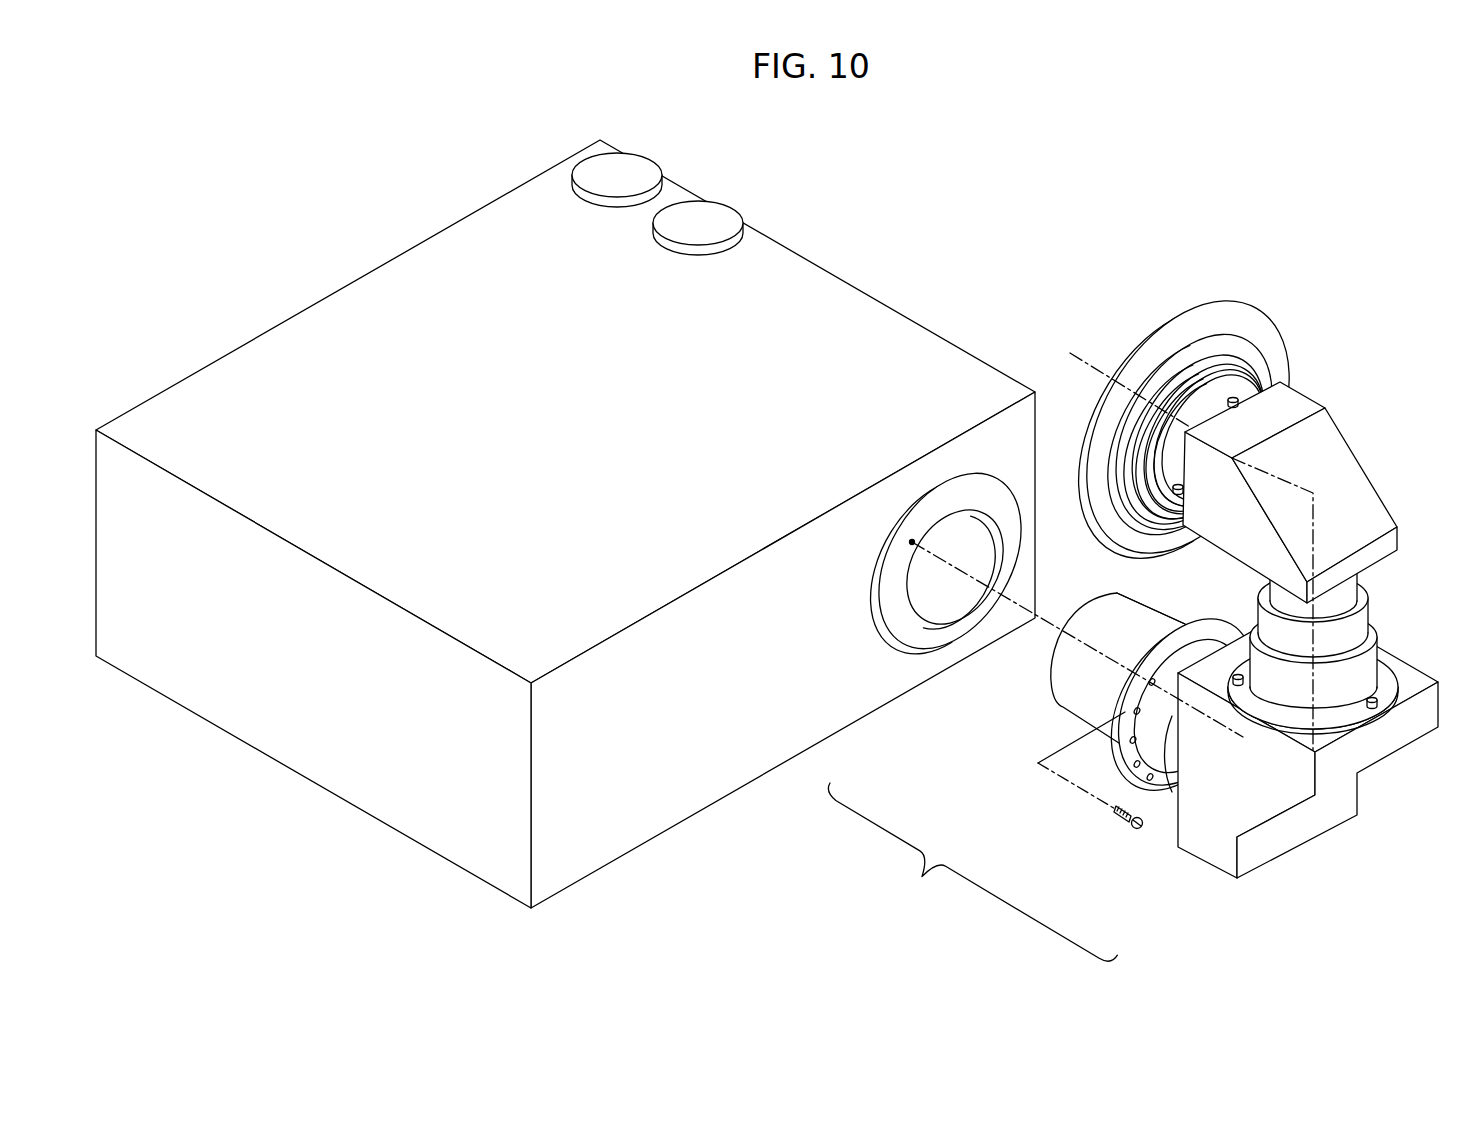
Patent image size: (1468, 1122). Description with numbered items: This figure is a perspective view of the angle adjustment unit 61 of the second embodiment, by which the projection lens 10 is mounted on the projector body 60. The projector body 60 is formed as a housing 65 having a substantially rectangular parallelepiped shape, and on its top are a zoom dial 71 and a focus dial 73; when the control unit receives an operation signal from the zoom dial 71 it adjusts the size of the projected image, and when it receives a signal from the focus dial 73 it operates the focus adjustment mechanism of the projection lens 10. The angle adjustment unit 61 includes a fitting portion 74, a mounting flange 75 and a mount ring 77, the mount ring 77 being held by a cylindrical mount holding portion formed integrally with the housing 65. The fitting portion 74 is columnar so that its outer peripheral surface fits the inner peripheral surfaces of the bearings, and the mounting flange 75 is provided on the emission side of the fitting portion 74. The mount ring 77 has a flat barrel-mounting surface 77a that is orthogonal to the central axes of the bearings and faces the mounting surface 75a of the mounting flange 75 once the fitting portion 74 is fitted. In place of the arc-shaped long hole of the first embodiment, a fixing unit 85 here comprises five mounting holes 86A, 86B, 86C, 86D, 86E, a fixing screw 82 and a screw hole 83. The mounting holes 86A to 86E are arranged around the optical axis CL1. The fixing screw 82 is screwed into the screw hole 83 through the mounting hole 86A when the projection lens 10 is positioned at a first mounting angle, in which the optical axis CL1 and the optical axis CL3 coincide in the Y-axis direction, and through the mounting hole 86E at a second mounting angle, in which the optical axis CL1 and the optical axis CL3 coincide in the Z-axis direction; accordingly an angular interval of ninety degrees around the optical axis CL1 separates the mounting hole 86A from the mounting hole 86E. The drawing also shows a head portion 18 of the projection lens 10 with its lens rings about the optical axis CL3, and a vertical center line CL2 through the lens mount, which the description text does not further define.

The projection lens 10 is at (1384, 387).
The camera head 18 is at (1356, 512).
The projector body 60 is at (400, 280).
The angle adjustment unit 61 is at (1188, 891).
The housing 65 is at (262, 367).
The zoom dial 71 is at (707, 210).
The focus dial 73 is at (597, 177).
The fitting portion 74 is at (1118, 637).
The mounting flange 75 is at (1200, 620).
The mounting surface 75a is at (1163, 640).
The mount ring 77 is at (938, 510).
The mounting surface 77a is at (1005, 520).
The fixing screw 82 is at (1131, 832).
The screw hole 83 is at (911, 548).
The fixing unit 85 is at (965, 883).
The mounting hole 86A is at (1149, 682).
The mounting hole 86B is at (1134, 711).
The mounting hole 86C is at (1130, 740).
The mounting hole 86D is at (1134, 764).
The mounting hole 86E is at (1147, 777).
The optical axis CL1 is at (1243, 737).
The center line CL2 is at (1315, 605).
The optical axis CL3 is at (1093, 363).